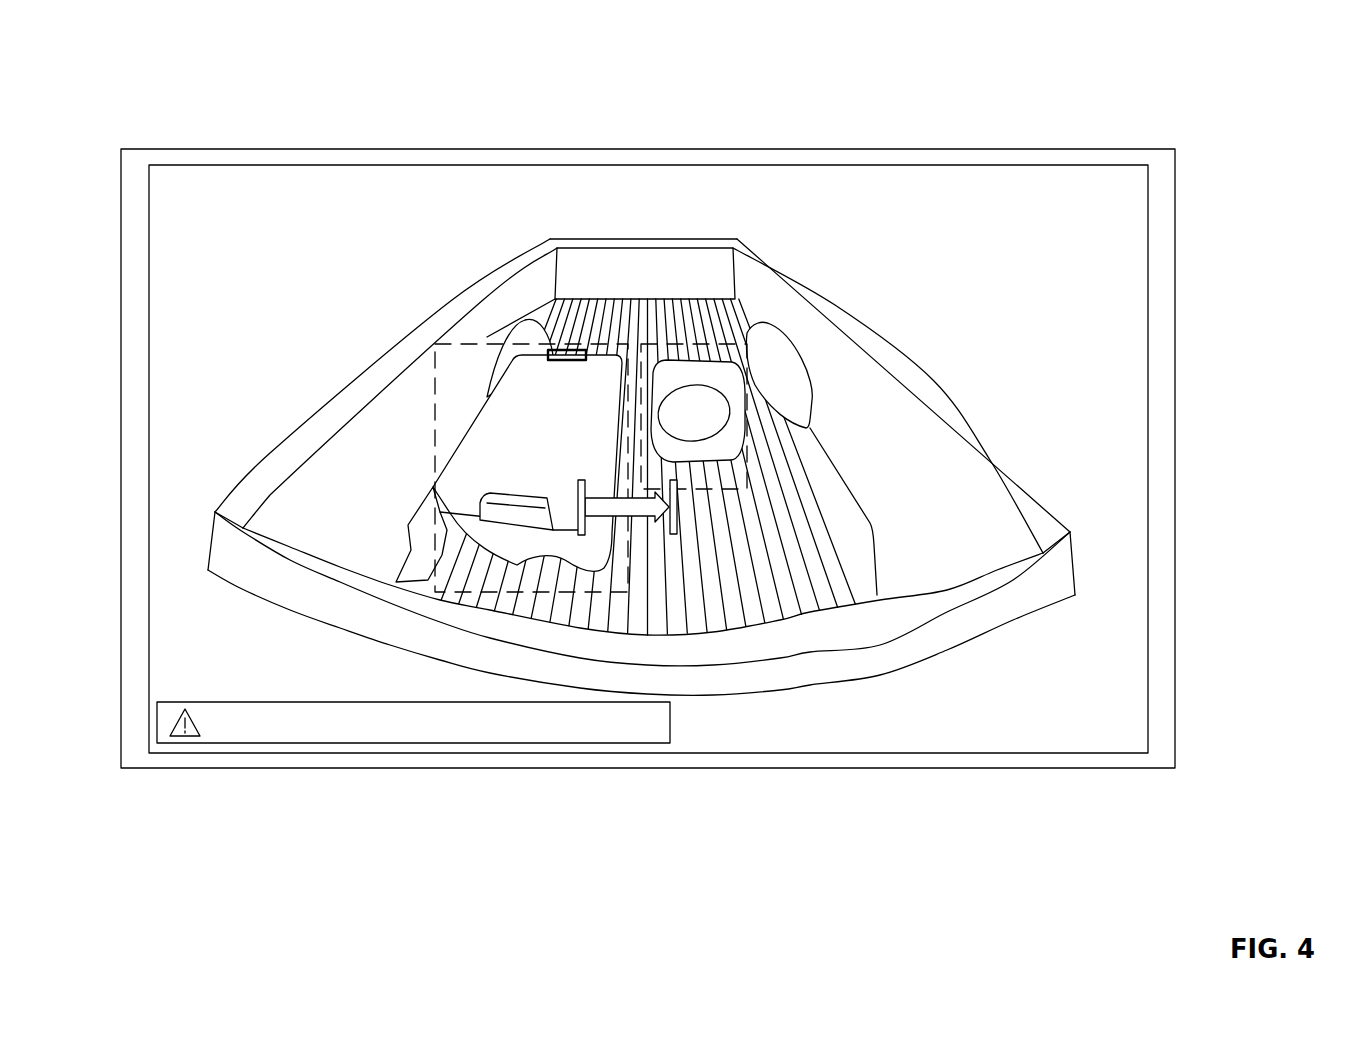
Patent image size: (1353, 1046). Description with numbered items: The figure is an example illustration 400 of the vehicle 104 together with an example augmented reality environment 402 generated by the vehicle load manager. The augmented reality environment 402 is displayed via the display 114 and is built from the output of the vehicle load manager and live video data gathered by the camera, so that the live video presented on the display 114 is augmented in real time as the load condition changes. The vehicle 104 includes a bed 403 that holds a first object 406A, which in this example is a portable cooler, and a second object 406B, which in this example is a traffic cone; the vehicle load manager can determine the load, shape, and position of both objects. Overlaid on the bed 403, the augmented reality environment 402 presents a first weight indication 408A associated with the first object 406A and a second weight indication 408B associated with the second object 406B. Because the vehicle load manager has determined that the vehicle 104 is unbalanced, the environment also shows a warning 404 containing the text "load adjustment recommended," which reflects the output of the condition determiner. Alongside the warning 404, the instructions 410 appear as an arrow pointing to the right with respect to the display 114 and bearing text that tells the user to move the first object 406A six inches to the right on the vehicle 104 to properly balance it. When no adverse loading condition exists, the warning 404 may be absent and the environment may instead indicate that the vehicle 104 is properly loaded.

The illustration 400 is at (1127, 77).
The display 114 is at (909, 147).
The augmented reality environment 402 is at (1148, 258).
The vehicle 104 is at (927, 331).
The bed 403 is at (933, 383).
The first object 406A is at (490, 415).
The first weight indication 408A is at (471, 343).
The second object 406B is at (742, 358).
The second weight indication 408B is at (684, 358).
The instructions 410 is at (643, 520).
The warning 404 is at (530, 745).